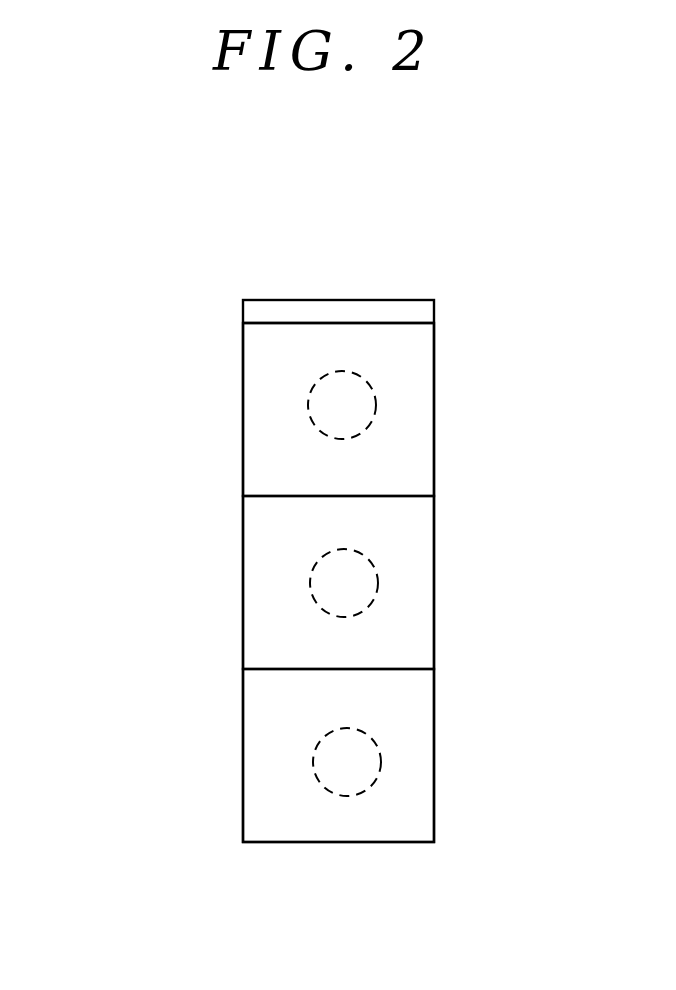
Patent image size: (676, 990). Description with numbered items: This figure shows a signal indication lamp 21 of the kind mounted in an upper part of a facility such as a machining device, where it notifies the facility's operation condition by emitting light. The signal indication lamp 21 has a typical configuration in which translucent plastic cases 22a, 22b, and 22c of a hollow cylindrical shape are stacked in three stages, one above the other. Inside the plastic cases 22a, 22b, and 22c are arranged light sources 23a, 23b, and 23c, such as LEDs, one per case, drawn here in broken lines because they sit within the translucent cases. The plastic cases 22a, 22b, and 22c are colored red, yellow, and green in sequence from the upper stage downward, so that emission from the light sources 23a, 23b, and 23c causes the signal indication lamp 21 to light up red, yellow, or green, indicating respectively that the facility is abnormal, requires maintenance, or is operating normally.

The signal indication lamp 21 is at (168, 345).
The plastic case 22a is at (435, 370).
The plastic case 22b is at (435, 560).
The plastic case 22c is at (435, 737).
The light source 23a is at (374, 415).
The light source 23b is at (376, 592).
The light source 23c is at (379, 770).